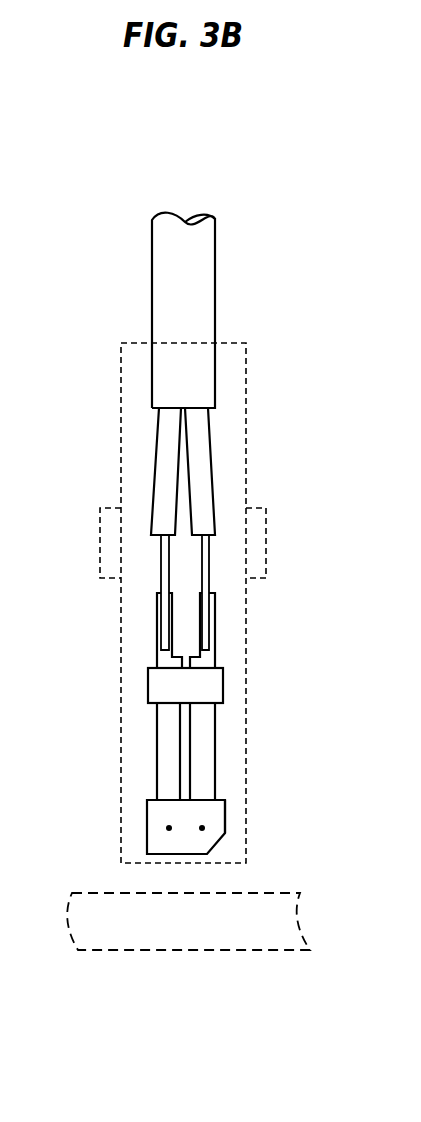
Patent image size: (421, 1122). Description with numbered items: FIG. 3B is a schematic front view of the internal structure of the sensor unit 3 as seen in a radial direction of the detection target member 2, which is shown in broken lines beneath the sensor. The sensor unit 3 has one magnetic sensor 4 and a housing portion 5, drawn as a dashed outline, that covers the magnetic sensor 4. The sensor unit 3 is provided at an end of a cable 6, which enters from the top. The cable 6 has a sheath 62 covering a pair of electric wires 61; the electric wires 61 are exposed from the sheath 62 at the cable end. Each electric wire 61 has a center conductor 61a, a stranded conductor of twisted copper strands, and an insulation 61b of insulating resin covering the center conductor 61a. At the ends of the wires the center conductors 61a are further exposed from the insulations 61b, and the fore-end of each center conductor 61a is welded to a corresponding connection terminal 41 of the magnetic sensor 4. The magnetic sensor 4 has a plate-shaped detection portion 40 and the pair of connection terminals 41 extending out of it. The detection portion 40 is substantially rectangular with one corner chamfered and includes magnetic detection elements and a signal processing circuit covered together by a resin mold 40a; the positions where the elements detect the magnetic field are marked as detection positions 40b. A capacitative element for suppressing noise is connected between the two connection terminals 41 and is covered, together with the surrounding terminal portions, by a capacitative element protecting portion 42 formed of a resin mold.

The detection target member 2 is at (70, 893).
The sensor unit 3 is at (123, 269).
The magnetic sensor 4 is at (222, 790).
The housing portion 5 is at (246, 343).
The cable 6 is at (219, 426).
The detection portion 40 is at (194, 826).
The resin mold 40a is at (215, 807).
The detection positions 40b is at (202, 828).
The connection terminals 41 is at (203, 726).
The capacitative element protecting portion 42 is at (165, 677).
The electric wire 61 is at (219, 528).
The center conductor 61a is at (207, 556).
The insulation 61b is at (205, 463).
The sheath 62 is at (208, 280).